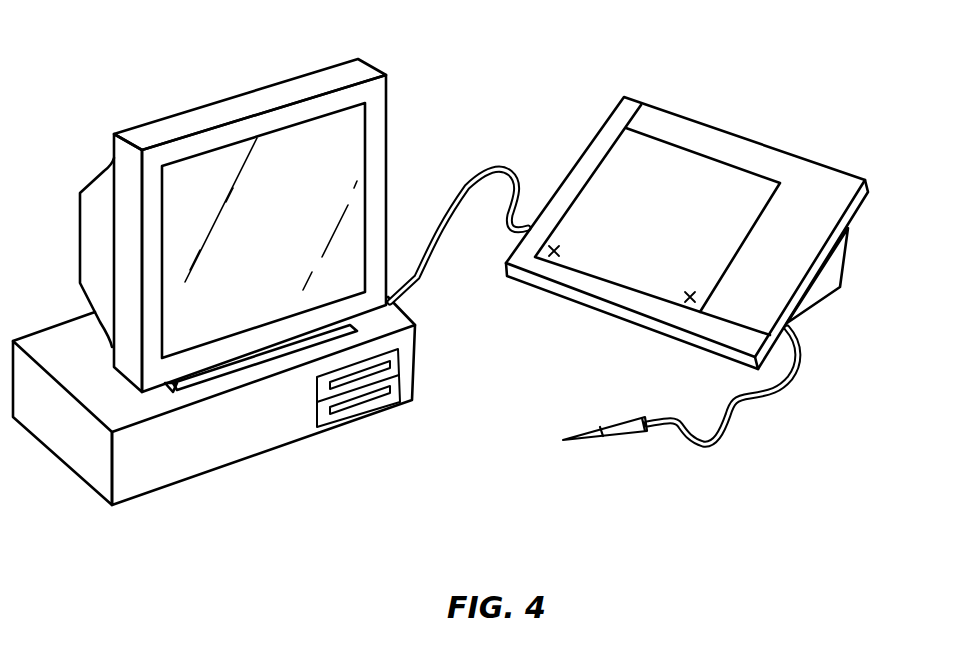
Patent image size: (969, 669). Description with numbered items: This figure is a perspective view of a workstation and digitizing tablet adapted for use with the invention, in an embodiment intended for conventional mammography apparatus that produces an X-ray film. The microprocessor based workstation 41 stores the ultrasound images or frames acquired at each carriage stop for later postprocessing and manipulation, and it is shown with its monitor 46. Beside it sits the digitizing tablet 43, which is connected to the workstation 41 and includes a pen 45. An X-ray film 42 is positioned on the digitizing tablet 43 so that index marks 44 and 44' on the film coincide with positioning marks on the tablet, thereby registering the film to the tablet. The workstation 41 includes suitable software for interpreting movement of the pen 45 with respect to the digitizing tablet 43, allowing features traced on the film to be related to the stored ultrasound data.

The workstation 41 is at (257, 445).
The X-ray film 42 is at (653, 153).
The digitizing tablet 43 is at (787, 158).
The index mark 44 is at (593, 241).
The index mark 44' is at (734, 284).
The pen 45 is at (600, 432).
The monitor 46 is at (383, 132).